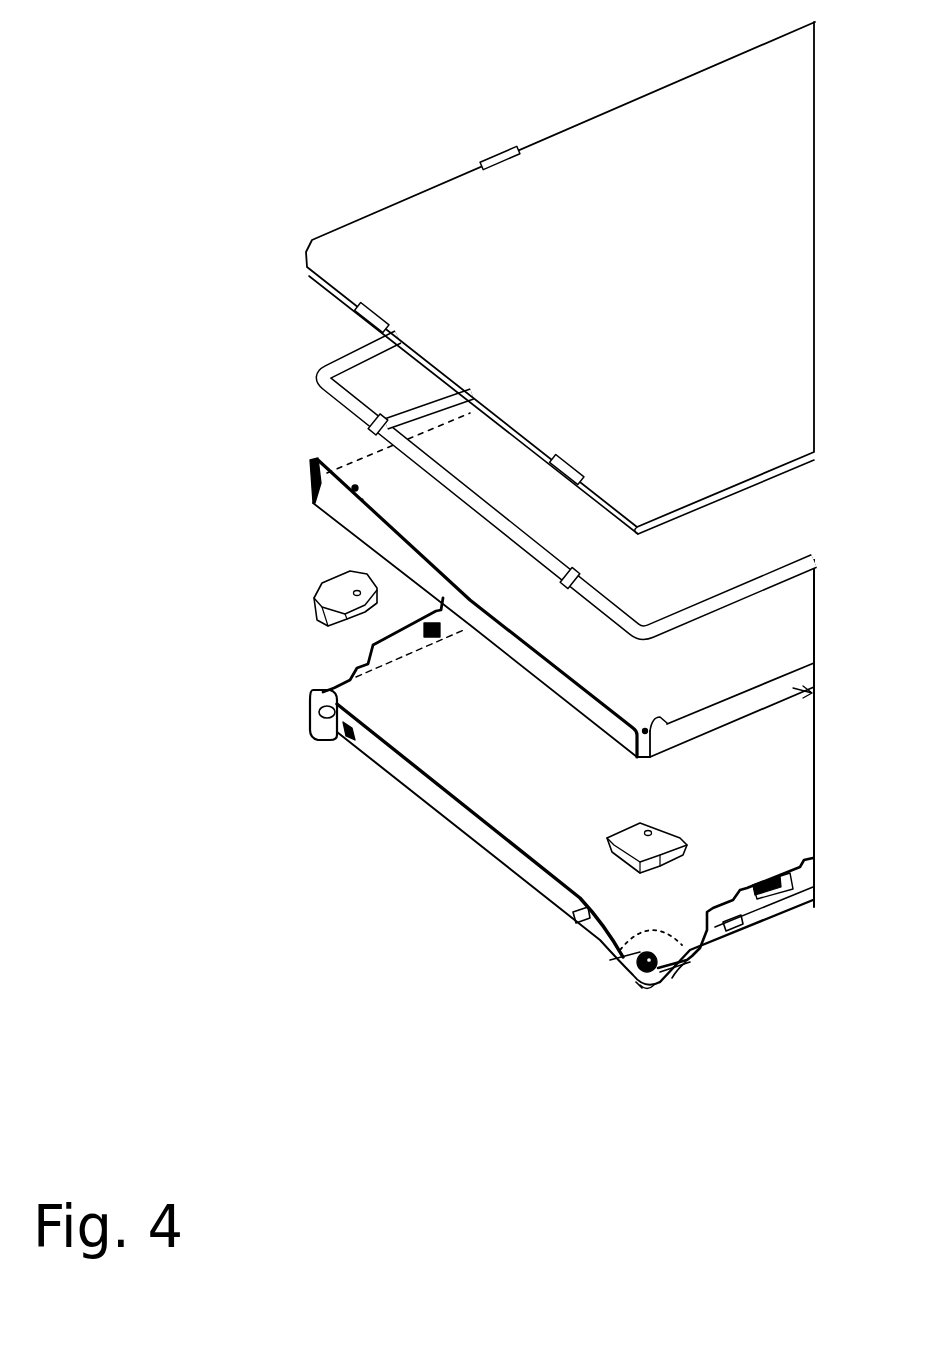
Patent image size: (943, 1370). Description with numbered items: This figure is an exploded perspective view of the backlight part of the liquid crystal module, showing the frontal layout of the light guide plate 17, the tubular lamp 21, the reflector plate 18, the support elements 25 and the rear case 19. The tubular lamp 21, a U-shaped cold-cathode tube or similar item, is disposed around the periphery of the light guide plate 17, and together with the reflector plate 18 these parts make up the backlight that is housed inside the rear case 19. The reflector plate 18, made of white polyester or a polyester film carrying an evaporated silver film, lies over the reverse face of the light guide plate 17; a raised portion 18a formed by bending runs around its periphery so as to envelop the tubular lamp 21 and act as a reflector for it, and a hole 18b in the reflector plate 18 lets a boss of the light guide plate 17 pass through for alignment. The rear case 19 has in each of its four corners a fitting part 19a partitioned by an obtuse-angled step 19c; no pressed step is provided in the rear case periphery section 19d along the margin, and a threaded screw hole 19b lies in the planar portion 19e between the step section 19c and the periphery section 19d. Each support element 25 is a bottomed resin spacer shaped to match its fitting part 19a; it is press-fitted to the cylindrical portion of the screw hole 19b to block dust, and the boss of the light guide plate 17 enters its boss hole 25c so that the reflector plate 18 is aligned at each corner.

The light guide plate 17 is at (650, 118).
The reflector plate 18 is at (318, 456).
The raised portion 18a is at (814, 705).
The hole 18b is at (352, 488).
The rear case 19 is at (367, 763).
The fitting part 19a is at (298, 691).
The screw hole 19b is at (680, 978).
The step 19c is at (692, 963).
The rear case periphery section 19d is at (622, 957).
The planar portion 19e is at (642, 984).
The tubular lamp 21 is at (320, 374).
The support element 25 is at (320, 598).
The boss hole 25c is at (355, 590).